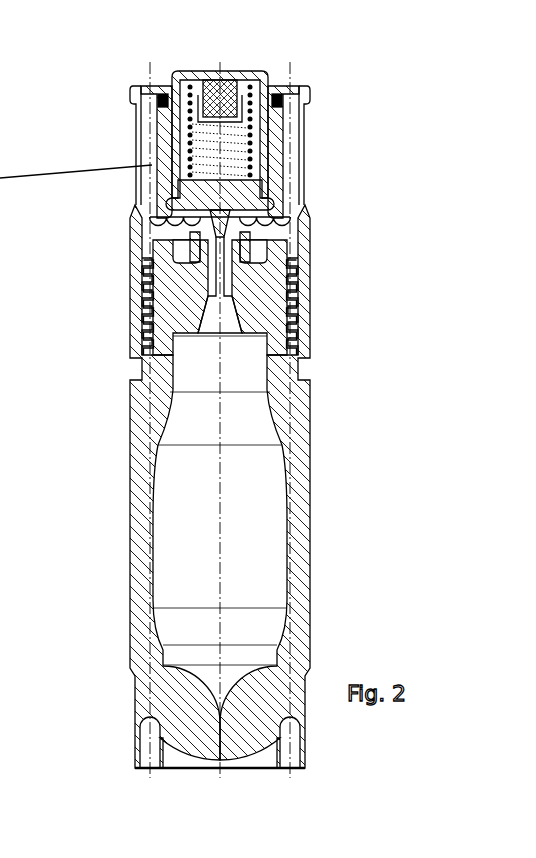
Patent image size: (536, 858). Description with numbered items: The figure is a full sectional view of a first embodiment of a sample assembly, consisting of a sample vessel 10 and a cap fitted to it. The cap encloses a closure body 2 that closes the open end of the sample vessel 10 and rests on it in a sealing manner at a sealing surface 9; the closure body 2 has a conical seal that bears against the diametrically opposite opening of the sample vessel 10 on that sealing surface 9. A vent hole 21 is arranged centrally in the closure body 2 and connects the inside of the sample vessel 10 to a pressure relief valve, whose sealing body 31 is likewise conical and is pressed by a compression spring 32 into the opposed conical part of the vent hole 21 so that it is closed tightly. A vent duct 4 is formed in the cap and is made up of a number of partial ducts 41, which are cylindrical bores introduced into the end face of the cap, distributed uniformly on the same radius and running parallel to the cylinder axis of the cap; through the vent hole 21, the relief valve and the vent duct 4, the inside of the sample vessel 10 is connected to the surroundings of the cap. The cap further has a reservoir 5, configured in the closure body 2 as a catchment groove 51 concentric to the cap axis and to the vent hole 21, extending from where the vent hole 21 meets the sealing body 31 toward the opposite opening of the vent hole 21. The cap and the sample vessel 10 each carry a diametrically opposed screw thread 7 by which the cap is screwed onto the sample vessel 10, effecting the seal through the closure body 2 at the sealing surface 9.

The sample vessel 10 is at (323, 527).
The closure body 2 is at (258, 279).
The vent hole 21 is at (222, 310).
The vent duct 4 is at (141, 133).
The partial ducts 41 is at (297, 160).
The compression spring 32 is at (240, 130).
The reservoir 5 is at (270, 242).
The catchment groove 51 is at (262, 257).
The sealing body 31 is at (163, 232).
The screw thread 7 is at (143, 323).
The sealing surface 9 is at (275, 323).